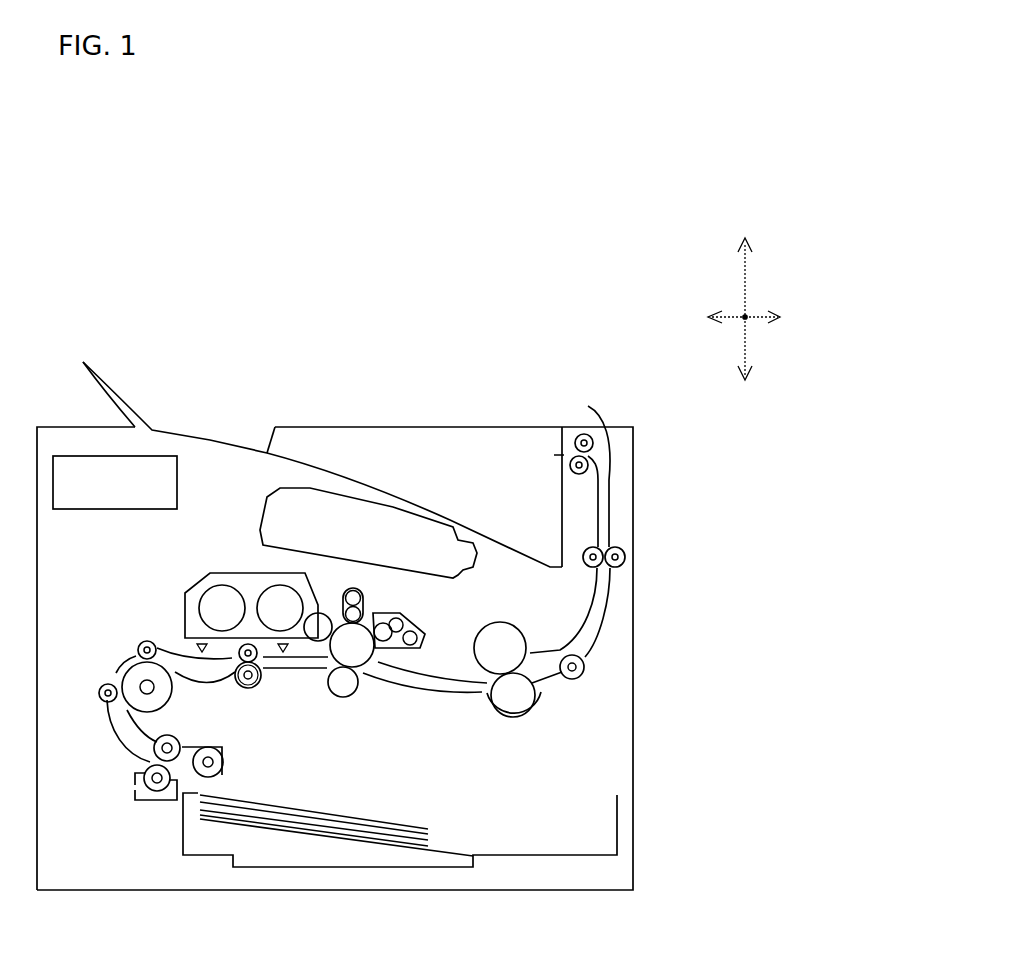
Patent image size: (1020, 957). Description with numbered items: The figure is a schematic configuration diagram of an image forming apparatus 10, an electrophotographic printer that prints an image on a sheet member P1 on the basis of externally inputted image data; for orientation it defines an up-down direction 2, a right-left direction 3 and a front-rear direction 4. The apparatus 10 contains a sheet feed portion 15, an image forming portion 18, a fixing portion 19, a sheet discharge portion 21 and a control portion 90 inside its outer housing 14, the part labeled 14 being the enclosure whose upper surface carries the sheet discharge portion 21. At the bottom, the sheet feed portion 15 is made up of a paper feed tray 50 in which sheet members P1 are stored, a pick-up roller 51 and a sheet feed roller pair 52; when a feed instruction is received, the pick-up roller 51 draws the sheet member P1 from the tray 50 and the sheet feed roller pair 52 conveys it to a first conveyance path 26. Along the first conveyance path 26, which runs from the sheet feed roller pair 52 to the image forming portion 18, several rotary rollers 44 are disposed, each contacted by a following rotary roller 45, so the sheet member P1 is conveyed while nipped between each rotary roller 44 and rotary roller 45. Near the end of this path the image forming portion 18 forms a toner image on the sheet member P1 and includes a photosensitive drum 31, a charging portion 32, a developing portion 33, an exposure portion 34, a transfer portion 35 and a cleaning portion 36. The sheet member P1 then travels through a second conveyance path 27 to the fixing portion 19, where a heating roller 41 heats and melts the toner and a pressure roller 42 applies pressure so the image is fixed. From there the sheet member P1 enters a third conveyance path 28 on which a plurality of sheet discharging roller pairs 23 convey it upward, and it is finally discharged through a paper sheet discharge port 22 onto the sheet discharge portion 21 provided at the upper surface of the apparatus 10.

The up-down direction 2 is at (743, 275).
The right-left direction 3 is at (735, 313).
The front-rear direction 4 is at (747, 308).
The image forming apparatus 10 is at (370, 627).
The housing 14 is at (633, 692).
The sheet feed portion 15 is at (138, 858).
The image forming portion 18 is at (328, 693).
The fixing portion 19 is at (483, 718).
The sheet discharge portion 21 is at (375, 480).
The paper sheet discharge port 22 is at (550, 450).
The sheet discharging roller pairs 23 is at (587, 432).
The first conveyance path 26 is at (117, 660).
The second conveyance path 27 is at (423, 695).
The third conveyance path 28 is at (607, 623).
The photosensitive drum 31 is at (369, 661).
The charging portion 32 is at (365, 592).
The developing portion 33 is at (248, 574).
The exposure portion 34 is at (263, 513).
The transfer portion 35 is at (343, 697).
The cleaning portion 36 is at (418, 624).
The heating roller 41 is at (515, 623).
The pressure roller 42 is at (517, 721).
The rotary rollers 44 is at (163, 707).
The rotary rollers 45 is at (145, 640).
The paper feed tray 50 is at (183, 830).
The pick-up roller 51 is at (222, 773).
The sheet feed roller pair 52 is at (147, 773).
The control portion 90 is at (80, 510).
The sheet member P1 is at (355, 813).